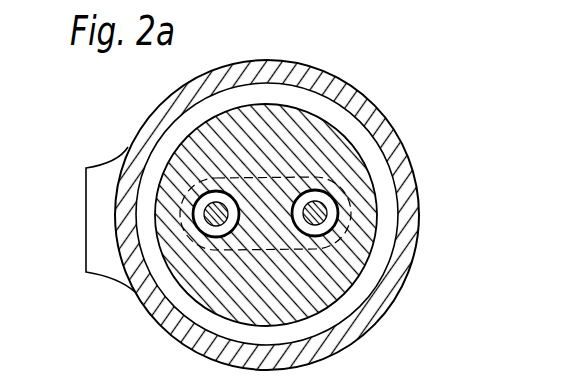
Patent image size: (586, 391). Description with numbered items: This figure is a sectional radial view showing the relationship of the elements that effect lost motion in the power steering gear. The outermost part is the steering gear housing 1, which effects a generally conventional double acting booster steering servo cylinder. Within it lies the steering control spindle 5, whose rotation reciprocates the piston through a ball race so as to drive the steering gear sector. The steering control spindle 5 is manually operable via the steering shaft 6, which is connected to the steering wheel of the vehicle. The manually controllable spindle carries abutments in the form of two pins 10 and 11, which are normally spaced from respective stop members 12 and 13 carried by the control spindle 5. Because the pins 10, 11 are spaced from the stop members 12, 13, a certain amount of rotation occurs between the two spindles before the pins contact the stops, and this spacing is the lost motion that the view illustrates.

The steering gear housing 1 is at (395, 257).
The steering control spindle 5 is at (158, 232).
The steering shaft 6 is at (277, 200).
The pin 10 is at (188, 180).
The pin 11 is at (326, 200).
The stop member 12 is at (181, 205).
The stop member 13 is at (332, 223).